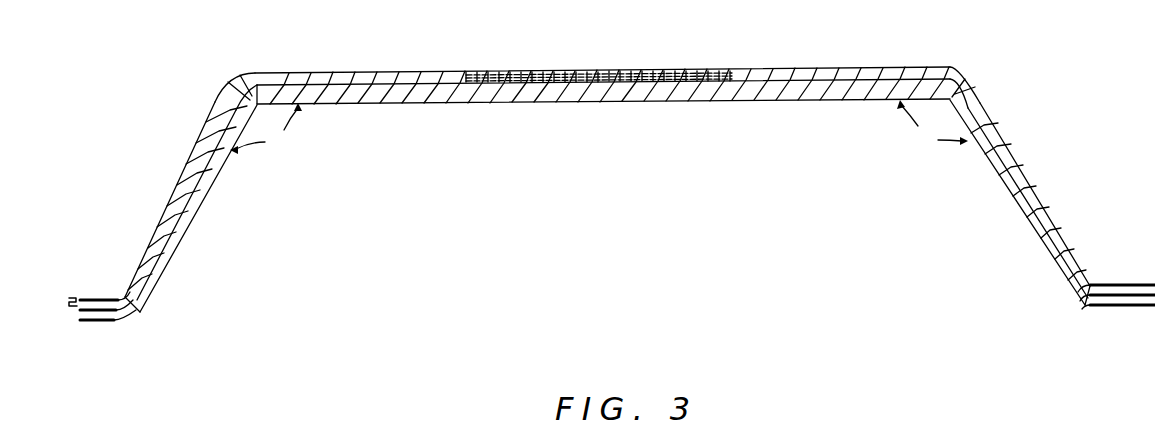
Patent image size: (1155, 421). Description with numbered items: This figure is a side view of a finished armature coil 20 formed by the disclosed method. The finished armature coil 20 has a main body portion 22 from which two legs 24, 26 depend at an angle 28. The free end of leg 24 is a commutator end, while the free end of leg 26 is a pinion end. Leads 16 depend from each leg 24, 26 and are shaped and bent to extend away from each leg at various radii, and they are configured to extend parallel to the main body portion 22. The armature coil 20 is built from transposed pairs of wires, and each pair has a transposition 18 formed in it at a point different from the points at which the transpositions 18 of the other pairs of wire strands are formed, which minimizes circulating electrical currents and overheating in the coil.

The leads 16 is at (118, 319).
The transposition 18 is at (522, 80).
The finished armature coil 20 is at (612, 190).
The main body portion 22 is at (400, 71).
The leg 24 is at (1022, 162).
The leg 26 is at (183, 221).
The angle 28 is at (284, 152).